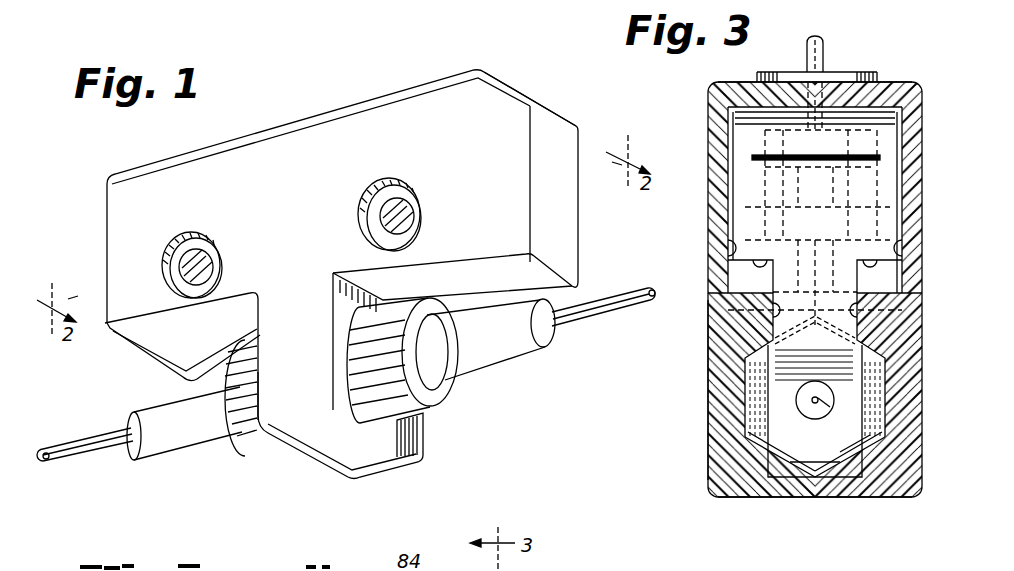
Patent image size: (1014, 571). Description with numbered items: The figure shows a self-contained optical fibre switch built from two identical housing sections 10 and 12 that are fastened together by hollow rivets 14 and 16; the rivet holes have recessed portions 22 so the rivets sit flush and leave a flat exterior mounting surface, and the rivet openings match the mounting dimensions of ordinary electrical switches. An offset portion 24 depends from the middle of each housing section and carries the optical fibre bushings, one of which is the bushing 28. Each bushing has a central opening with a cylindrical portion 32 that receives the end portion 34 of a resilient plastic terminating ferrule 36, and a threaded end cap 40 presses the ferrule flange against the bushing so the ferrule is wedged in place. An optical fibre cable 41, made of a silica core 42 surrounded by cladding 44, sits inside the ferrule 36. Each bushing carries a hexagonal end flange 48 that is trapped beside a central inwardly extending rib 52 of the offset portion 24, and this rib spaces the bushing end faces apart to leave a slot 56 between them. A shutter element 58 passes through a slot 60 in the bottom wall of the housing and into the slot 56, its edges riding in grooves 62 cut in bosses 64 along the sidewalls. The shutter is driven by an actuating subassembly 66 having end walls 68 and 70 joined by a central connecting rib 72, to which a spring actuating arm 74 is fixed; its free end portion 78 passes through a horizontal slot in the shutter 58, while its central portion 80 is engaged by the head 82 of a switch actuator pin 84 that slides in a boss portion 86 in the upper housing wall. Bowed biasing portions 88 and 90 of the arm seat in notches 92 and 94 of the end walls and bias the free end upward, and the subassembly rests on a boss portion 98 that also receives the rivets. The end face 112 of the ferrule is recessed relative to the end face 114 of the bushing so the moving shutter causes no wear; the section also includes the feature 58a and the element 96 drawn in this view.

In FIG. 1, the housing section 10 is at (560, 120).
In FIG. 3, the housing section 10 is at (924, 455).
In FIG. 1, the housing section 12 is at (507, 93).
In FIG. 3, the housing section 12 is at (706, 455).
In FIG. 1, the hollow rivet 14 is at (188, 236).
In FIG. 1, the hollow rivet 16 is at (380, 220).
In FIG. 1, the recessed portion 22 is at (213, 236).
In FIG. 1, the offset portion 24 is at (303, 435).
In FIG. 3, the offset portion 24 is at (740, 497).
In FIG. 3, the optical fibre bushing 28 is at (793, 470).
In FIG. 3, the central cylindrical portion 32 is at (807, 397).
In FIG. 3, the end portion of ferrule 34 is at (844, 454).
In FIG. 1, the optical fibre cable terminating ferrule 36 is at (163, 450).
In FIG. 1, the threaded end cap 40 is at (257, 447).
In FIG. 1, the optical fibre cable 41 is at (93, 430).
In FIG. 1, the central silica core 42 is at (34, 452).
In FIG. 3, the central silica core 42 is at (813, 403).
In FIG. 1, the outer cladding or sheathing 44 is at (46, 462).
In FIG. 3, the hexagonal end flange 48 is at (847, 463).
In FIG. 3, the central inwardly extending rib 52 is at (758, 402).
In FIG. 3, the slot 56 is at (845, 397).
In FIG. 3, the shutter element 58 is at (890, 223).
In FIG. 3, the sleeve step 58a is at (853, 270).
In FIG. 3, the slot 60 is at (747, 312).
In FIG. 3, the groove 62 is at (730, 248).
In FIG. 3, the boss 64 is at (750, 268).
In FIG. 3, the shutter blade actuating subassembly 66 is at (880, 78).
In FIG. 3, the end wall 68 is at (717, 112).
In FIG. 3, the end wall 70 is at (897, 133).
In FIG. 3, the central connecting rib portion 72 is at (850, 229).
In FIG. 3, the spring actuating arm 74 is at (877, 157).
In FIG. 3, the outer free end portion 78 is at (757, 157).
In FIG. 3, the central portion of spring arm 80 is at (821, 185).
In FIG. 3, the head portion 82 is at (788, 77).
In FIG. 3, the switch actuator pin 84 is at (823, 37).
In FIG. 3, the boss portion 86 is at (757, 105).
In FIG. 3, the bowed spring arm biasing portion 88 is at (733, 201).
In FIG. 3, the bowed spring arm biasing portion 90 is at (900, 191).
In FIG. 3, the notch 92 is at (723, 173).
In FIG. 3, the notch 94 is at (880, 170).
In FIG. 3, the guide rib 96 is at (792, 229).
In FIG. 3, the boss portion 98 is at (772, 307).
In FIG. 3, the end face of terminating ferrule 112 is at (812, 380).
In FIG. 3, the end face of bushing 114 is at (835, 460).